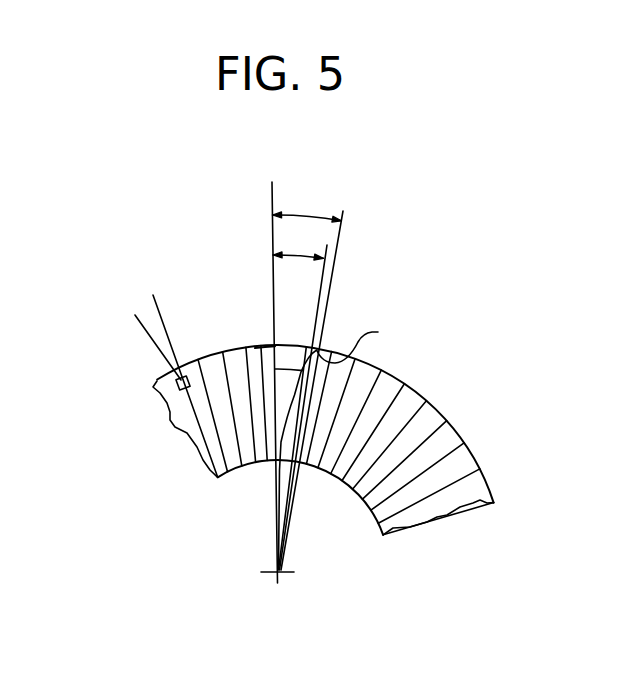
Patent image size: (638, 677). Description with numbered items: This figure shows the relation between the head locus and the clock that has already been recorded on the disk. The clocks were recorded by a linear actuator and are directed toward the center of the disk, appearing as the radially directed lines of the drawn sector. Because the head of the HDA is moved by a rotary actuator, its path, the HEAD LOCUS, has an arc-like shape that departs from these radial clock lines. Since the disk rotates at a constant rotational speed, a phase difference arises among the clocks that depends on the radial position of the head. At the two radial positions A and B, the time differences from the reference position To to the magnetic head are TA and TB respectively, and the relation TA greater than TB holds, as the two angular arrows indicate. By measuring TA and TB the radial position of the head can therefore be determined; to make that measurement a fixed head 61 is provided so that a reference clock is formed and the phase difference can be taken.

The fixed head 61 is at (158, 382).
The radial position A is at (281, 369).
The radial position B is at (255, 348).
The time difference TA is at (308, 375).
The time difference TB is at (300, 396).
The reference position To is at (274, 362).
The head locus HEAD LOCUS is at (412, 441).